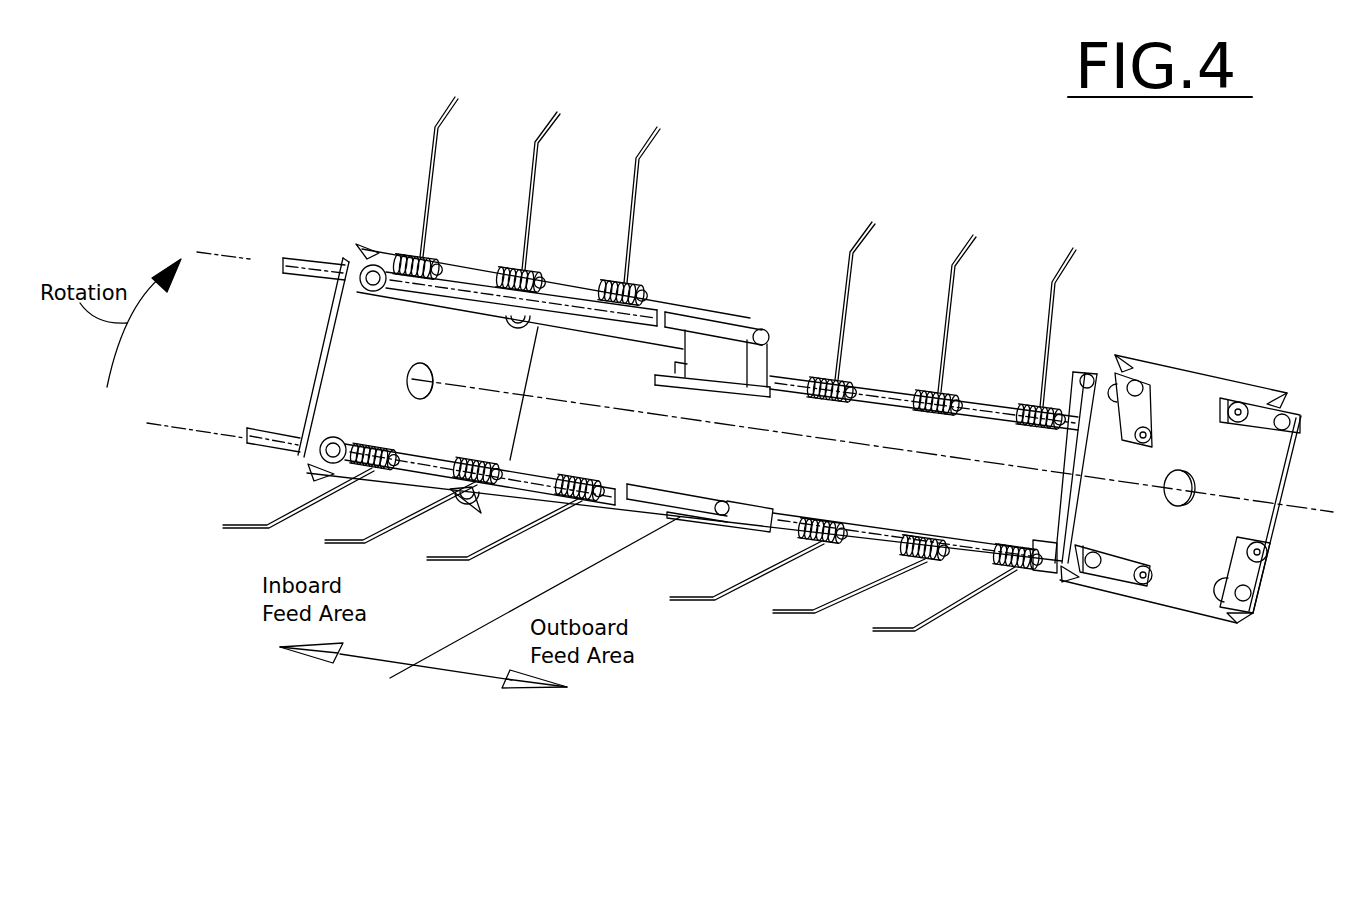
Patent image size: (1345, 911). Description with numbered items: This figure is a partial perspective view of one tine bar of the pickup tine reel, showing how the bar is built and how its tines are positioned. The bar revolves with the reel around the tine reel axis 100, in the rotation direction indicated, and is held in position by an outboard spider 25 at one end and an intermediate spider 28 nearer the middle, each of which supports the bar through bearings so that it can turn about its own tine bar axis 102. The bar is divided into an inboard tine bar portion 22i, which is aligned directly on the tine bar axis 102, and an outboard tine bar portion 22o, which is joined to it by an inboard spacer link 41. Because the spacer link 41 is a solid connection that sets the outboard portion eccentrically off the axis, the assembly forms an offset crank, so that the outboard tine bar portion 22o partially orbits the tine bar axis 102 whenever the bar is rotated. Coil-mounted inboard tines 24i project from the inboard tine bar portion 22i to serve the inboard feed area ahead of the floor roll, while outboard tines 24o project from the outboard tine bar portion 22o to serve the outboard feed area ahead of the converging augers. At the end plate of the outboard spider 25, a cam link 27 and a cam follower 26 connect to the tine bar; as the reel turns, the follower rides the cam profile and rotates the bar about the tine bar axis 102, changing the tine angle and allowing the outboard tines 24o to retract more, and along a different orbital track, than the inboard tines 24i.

The inboard tine bar portion 22i is at (302, 256).
The inboard tines 24i is at (437, 147).
The outboard tine bar portion 22o is at (890, 403).
The outboard tines 24o is at (866, 239).
The outboard spider 25 is at (1190, 377).
The cam follower 26 is at (1237, 420).
The cam link 27 is at (1258, 408).
The intermediate spider 28 is at (357, 407).
The inboard spacer link 41 is at (707, 347).
The tine reel axis 100 is at (683, 418).
The tine bar axis 102 is at (223, 252).